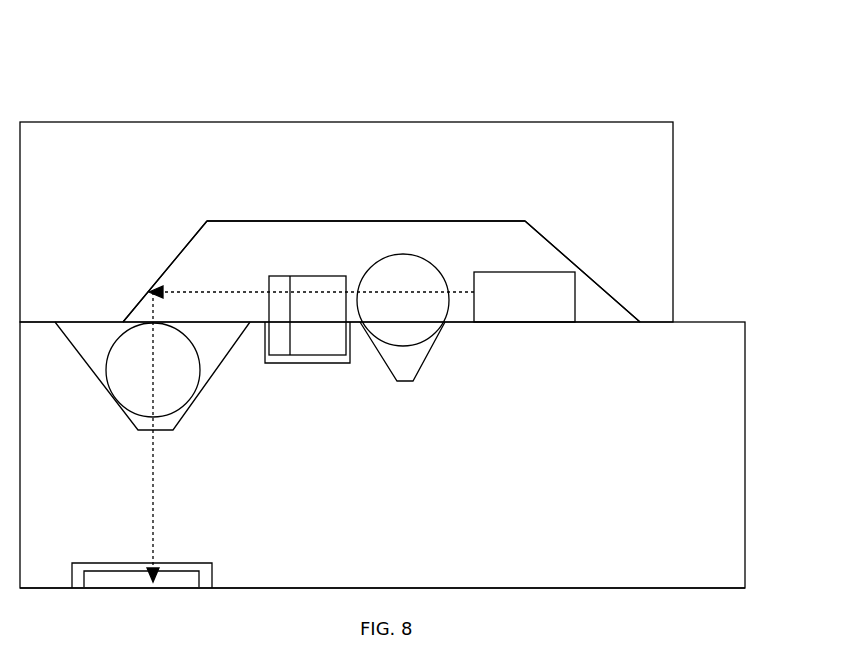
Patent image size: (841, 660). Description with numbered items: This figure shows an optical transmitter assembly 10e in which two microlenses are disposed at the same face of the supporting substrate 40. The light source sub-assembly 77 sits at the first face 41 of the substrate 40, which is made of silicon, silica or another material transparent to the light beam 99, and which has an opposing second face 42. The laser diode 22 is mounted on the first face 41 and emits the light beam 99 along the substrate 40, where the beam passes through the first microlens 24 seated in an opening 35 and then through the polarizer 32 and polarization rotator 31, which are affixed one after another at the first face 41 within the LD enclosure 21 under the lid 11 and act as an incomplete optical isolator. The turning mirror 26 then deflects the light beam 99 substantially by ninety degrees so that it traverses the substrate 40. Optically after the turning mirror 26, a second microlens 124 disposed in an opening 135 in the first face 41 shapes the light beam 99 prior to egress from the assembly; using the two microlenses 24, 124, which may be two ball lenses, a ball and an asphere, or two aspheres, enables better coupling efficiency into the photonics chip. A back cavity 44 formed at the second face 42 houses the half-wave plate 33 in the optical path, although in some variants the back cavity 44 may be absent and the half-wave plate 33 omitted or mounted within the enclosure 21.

The optical transmitter assembly 10e is at (272, 84).
The lid 11 is at (87, 168).
The LD enclosure 21 is at (273, 221).
The laser diode 22 is at (533, 305).
The microlens 24 is at (401, 255).
The turning mirror 26 is at (178, 234).
The polarization rotator 31 is at (308, 276).
The polarizer 32 is at (280, 357).
The half-wave plate 33 is at (170, 571).
The opening 35 is at (428, 355).
The supporting substrate 40 is at (720, 453).
The first face 41 is at (602, 328).
The second face 42 is at (670, 580).
The back cavity 44 is at (198, 563).
The light source sub-assembly 77 is at (374, 230).
The light beam 99 is at (427, 292).
The second microlens 124 is at (105, 372).
The opening 135 is at (217, 370).